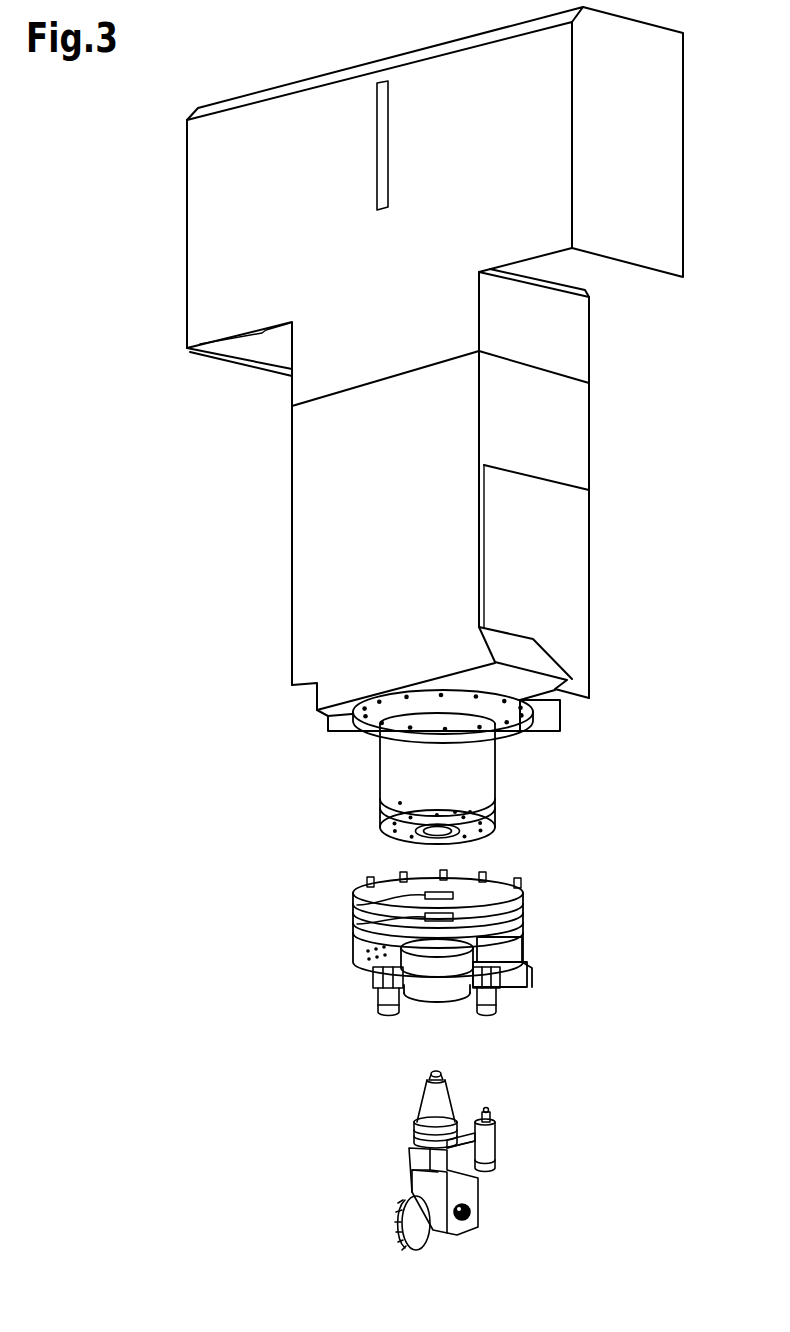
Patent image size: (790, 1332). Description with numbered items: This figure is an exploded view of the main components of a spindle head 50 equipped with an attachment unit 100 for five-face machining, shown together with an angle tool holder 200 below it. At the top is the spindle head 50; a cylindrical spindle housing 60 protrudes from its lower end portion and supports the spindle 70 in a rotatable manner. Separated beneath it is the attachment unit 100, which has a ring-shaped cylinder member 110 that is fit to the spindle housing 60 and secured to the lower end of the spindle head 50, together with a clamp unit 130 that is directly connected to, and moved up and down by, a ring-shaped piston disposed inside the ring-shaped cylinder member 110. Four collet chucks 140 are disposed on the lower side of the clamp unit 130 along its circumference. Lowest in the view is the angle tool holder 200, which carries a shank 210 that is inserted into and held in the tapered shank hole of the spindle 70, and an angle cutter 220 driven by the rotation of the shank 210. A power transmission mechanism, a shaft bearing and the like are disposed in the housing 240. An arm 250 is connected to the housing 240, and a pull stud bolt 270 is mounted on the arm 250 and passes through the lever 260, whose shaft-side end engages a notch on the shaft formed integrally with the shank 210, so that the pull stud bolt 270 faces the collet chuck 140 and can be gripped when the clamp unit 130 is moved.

The spindle head 50 is at (330, 525).
The spindle housing 60 is at (485, 771).
The spindle 70 is at (428, 840).
The attachment unit 100 is at (469, 948).
The ring-shaped cylinder member 110 is at (367, 905).
The clamp unit 130 is at (357, 937).
The collet chuck 140 is at (493, 998).
The angle tool holder 200 is at (492, 1155).
The shank 210 is at (435, 1103).
The angle cutter 220 is at (397, 1217).
The housing 240 is at (468, 1187).
The arm 250 is at (487, 1148).
The lever 260 is at (462, 1138).
The pull stud bolt 270 is at (495, 1127).